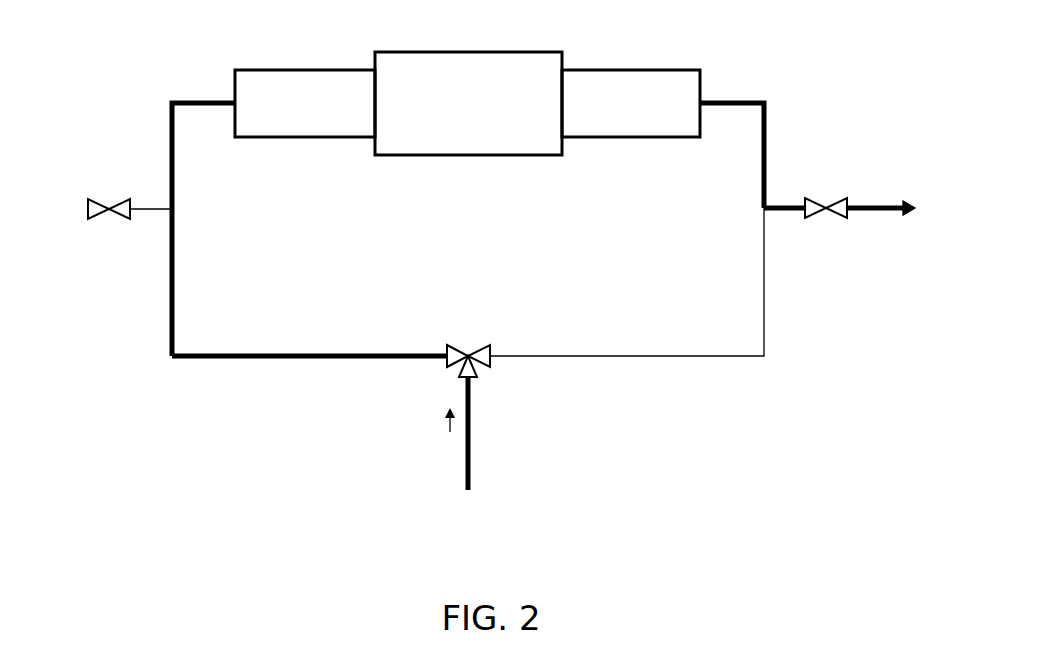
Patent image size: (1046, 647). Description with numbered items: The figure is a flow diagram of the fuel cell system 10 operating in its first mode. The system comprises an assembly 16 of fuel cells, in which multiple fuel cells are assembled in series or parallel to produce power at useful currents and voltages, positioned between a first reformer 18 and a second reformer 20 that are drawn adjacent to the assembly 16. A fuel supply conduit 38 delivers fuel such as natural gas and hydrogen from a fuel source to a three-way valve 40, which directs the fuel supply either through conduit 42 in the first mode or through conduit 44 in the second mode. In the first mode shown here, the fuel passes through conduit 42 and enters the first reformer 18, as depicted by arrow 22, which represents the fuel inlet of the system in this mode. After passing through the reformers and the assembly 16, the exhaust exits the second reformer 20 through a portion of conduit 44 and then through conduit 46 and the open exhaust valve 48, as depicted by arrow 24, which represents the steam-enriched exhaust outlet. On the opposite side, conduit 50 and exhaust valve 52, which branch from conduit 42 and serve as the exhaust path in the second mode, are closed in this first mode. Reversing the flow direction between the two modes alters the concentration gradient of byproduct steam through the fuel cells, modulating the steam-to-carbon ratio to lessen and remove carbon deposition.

The fuel cell system 10 is at (136, 40).
The assembly of fuel cells 16 is at (418, 52).
The first reformer 18 is at (290, 70).
The second reformer 20 is at (637, 70).
The fuel inlet 22 is at (212, 90).
The exhaust outlet 24 is at (838, 183).
The fuel supply conduit 38 is at (474, 426).
The three-way valve 40 is at (470, 353).
The conduit 42 is at (238, 359).
The conduit 44 is at (636, 358).
The conduit 46 is at (780, 213).
The exhaust valve 48 is at (834, 203).
The conduit 50 is at (146, 206).
The exhaust valve 52 is at (110, 203).